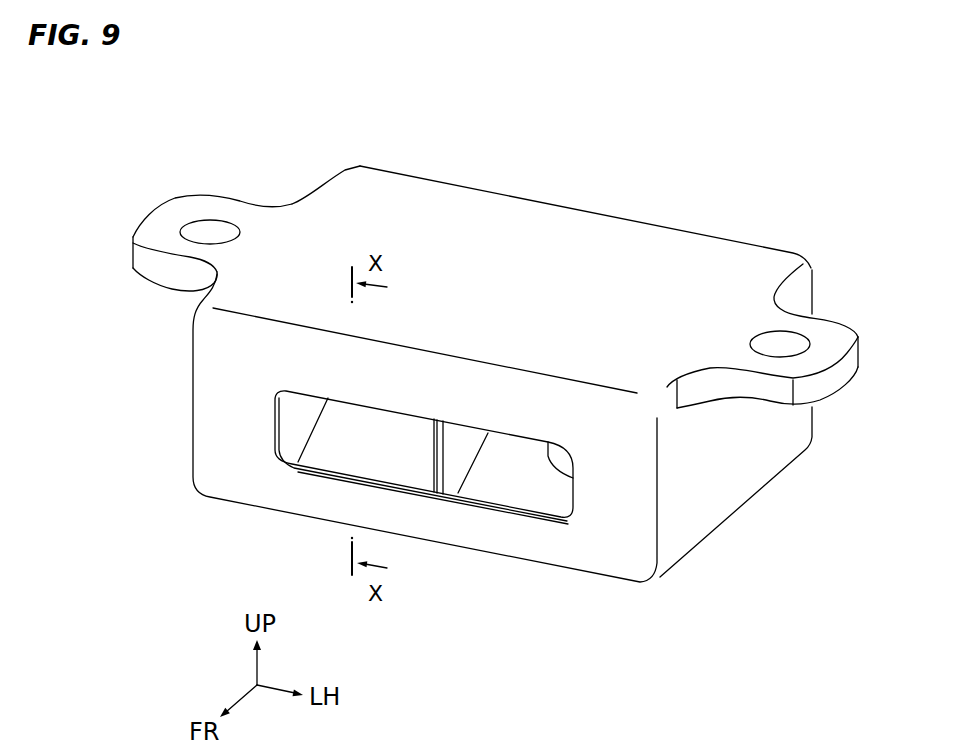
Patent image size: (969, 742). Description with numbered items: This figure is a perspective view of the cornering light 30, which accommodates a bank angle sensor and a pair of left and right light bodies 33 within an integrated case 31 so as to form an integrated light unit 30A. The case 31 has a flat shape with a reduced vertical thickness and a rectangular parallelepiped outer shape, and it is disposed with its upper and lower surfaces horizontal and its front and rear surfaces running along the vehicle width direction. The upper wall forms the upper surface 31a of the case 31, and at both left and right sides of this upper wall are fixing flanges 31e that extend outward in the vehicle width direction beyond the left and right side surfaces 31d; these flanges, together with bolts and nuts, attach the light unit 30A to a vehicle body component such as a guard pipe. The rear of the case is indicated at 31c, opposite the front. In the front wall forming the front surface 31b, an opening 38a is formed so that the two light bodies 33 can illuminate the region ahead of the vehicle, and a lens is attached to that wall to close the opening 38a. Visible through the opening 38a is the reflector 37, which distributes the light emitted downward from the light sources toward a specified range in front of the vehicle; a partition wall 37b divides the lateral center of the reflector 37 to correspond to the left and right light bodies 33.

The cornering light 30 is at (335, 156).
The integrated light unit 30A is at (493, 357).
The integrated case 31 is at (306, 180).
The upper surface 31a is at (482, 217).
The front surface 31b is at (228, 477).
The rear wall 31c is at (637, 222).
The side surface 31d is at (192, 395).
The fixing flange 31e is at (187, 205).
The light body 33 is at (458, 456).
The reflector 37 is at (400, 450).
The partition wall 37b is at (452, 440).
The opening 38a is at (549, 460).